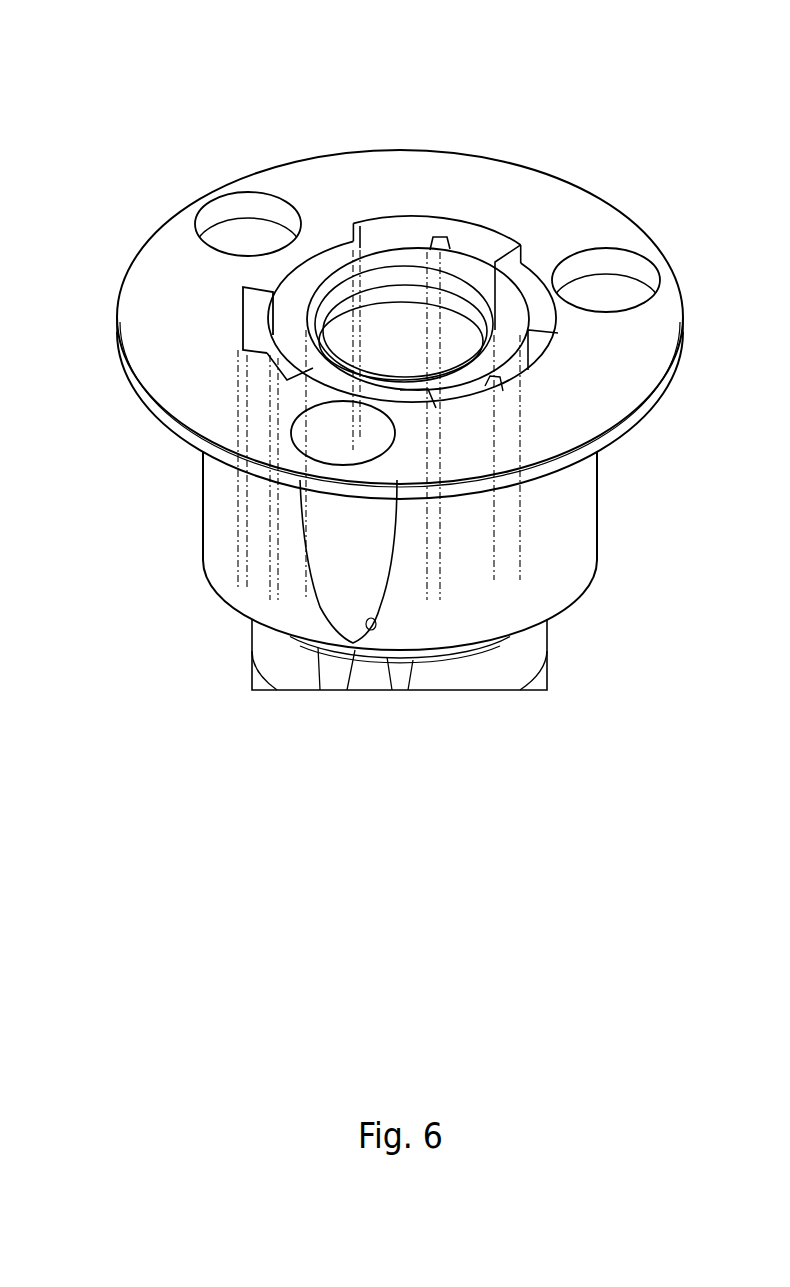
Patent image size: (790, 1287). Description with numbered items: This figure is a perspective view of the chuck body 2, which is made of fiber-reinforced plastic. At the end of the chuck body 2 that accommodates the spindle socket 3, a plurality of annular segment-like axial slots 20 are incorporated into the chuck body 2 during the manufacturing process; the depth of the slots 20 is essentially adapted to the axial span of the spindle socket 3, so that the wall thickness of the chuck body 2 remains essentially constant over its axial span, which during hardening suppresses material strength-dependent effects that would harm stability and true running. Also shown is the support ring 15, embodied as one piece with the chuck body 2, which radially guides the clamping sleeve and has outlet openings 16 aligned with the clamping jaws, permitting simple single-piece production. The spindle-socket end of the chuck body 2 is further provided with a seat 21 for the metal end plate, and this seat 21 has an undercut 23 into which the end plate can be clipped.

The chuck body 2 is at (243, 590).
The spindle socket 3 is at (407, 327).
The support ring 15 is at (427, 168).
The outlet openings 16 is at (244, 203).
The axial slots 20 is at (252, 320).
The seat 21 is at (338, 268).
The undercut 23 is at (339, 247).